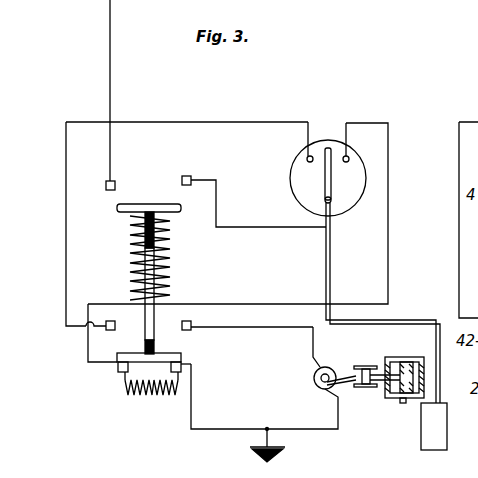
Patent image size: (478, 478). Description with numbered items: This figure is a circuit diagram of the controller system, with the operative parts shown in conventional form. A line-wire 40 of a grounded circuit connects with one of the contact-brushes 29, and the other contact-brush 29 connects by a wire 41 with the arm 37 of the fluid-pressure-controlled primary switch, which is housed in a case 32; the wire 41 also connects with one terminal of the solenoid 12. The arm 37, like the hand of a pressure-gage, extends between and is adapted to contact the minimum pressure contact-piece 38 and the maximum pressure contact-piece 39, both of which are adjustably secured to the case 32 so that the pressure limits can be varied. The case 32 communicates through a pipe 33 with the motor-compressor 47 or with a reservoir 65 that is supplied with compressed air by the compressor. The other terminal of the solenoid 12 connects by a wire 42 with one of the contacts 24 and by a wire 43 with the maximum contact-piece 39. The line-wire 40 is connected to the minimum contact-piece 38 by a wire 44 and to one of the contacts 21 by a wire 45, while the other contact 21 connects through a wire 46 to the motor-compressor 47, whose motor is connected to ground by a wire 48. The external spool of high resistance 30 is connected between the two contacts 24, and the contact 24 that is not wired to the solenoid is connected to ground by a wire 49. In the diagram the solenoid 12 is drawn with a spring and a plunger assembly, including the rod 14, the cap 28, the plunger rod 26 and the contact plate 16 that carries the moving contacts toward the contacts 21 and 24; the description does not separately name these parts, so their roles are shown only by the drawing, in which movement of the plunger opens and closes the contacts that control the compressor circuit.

The solenoid 12 is at (168, 273).
The rod 14 is at (152, 304).
The contact plate 16 is at (170, 361).
The contacts 21 is at (116, 326).
The contacts 24 is at (117, 374).
The plunger rod 26 is at (144, 216).
The cap 28 is at (150, 204).
The contact-brushes 29 is at (105, 188).
The spool of high resistance 30 is at (134, 397).
The case 32 is at (353, 205).
The pipe 33 is at (411, 325).
The arm 37 is at (324, 181).
The minimum pressure contact-piece 38 is at (306, 159).
The maximum pressure contact-piece 39 is at (349, 158).
The line-wire 40 is at (111, 82).
The wire 41 is at (216, 214).
The wire 42 is at (88, 345).
The wire 43 is at (388, 258).
The wire 44 is at (240, 122).
The wire 45 is at (66, 248).
The wire 46 is at (260, 332).
The motor-compressor 47 is at (384, 362).
The wire 48 is at (306, 425).
The wire 49 is at (191, 405).
The reservoir 65 is at (421, 433).